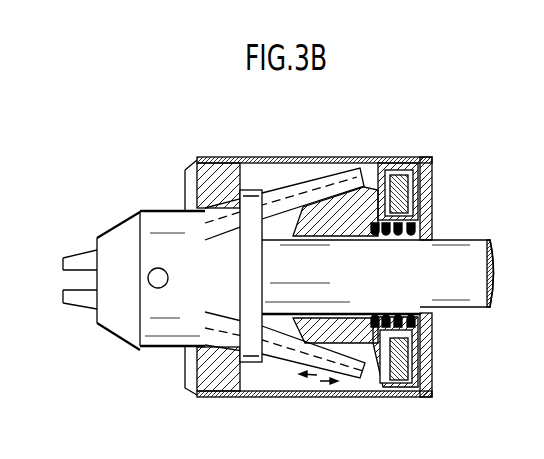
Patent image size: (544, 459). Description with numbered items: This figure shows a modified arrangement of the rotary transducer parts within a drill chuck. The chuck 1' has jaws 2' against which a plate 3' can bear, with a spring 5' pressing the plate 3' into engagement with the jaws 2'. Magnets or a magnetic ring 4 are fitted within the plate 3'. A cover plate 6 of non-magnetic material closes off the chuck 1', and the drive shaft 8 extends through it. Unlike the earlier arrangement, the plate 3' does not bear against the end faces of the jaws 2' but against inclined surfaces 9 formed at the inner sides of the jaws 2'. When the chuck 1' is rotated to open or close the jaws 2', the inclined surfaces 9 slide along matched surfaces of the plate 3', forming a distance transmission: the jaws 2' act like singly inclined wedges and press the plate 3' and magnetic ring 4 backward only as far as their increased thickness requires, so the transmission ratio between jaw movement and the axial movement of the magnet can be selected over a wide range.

The chuck 1' is at (247, 300).
The jaws 2' is at (284, 182).
The plate 3' is at (355, 180).
The magnetic ring 4 is at (418, 153).
The spring 5' is at (441, 277).
The cover plate 6 is at (432, 358).
The drive shaft 8 is at (478, 247).
The inclined surfaces 9 is at (308, 336).